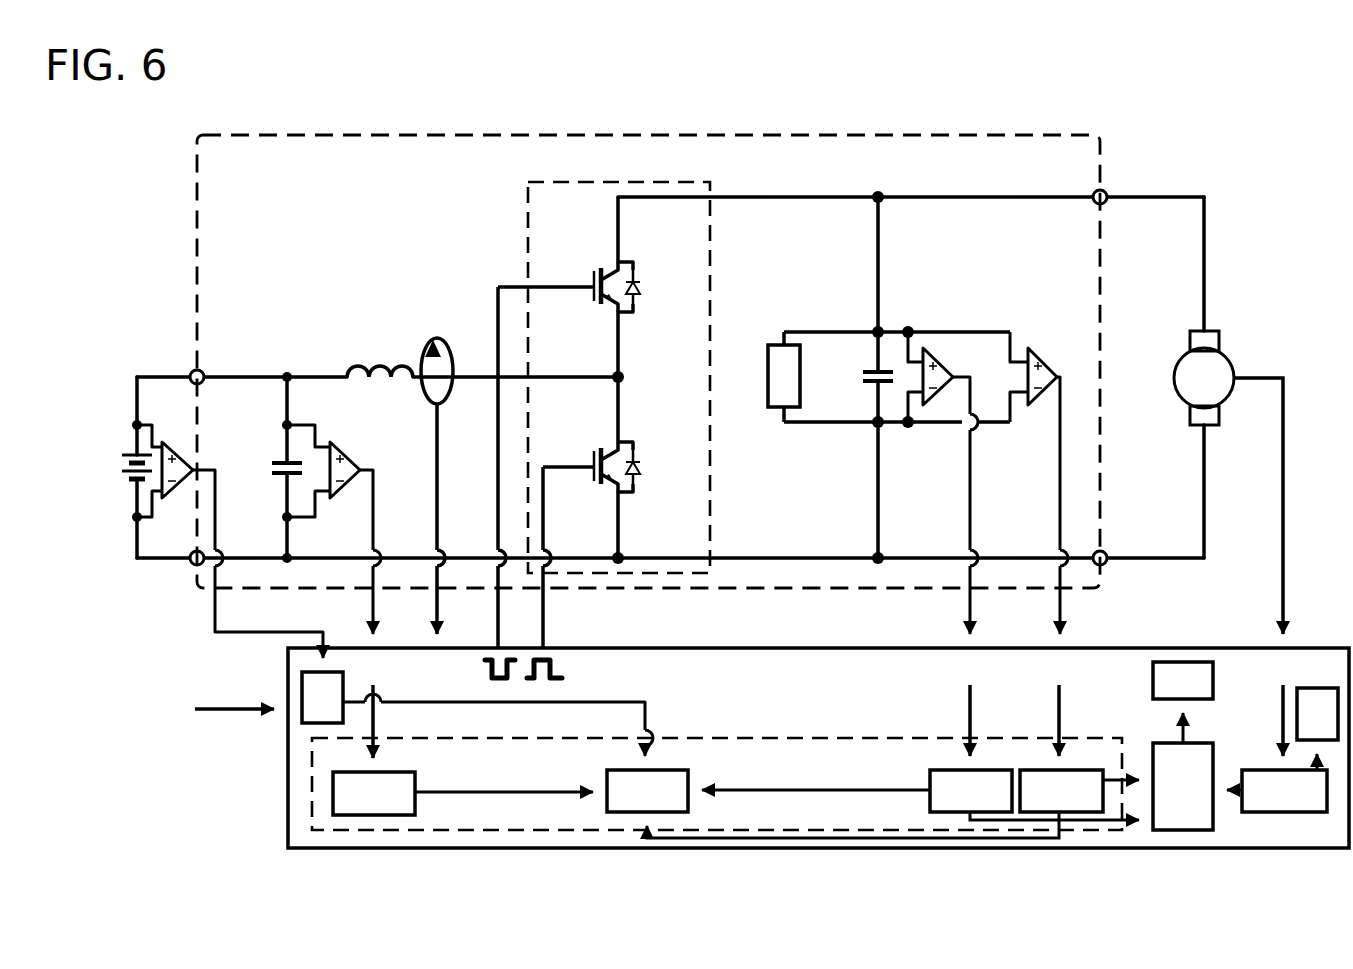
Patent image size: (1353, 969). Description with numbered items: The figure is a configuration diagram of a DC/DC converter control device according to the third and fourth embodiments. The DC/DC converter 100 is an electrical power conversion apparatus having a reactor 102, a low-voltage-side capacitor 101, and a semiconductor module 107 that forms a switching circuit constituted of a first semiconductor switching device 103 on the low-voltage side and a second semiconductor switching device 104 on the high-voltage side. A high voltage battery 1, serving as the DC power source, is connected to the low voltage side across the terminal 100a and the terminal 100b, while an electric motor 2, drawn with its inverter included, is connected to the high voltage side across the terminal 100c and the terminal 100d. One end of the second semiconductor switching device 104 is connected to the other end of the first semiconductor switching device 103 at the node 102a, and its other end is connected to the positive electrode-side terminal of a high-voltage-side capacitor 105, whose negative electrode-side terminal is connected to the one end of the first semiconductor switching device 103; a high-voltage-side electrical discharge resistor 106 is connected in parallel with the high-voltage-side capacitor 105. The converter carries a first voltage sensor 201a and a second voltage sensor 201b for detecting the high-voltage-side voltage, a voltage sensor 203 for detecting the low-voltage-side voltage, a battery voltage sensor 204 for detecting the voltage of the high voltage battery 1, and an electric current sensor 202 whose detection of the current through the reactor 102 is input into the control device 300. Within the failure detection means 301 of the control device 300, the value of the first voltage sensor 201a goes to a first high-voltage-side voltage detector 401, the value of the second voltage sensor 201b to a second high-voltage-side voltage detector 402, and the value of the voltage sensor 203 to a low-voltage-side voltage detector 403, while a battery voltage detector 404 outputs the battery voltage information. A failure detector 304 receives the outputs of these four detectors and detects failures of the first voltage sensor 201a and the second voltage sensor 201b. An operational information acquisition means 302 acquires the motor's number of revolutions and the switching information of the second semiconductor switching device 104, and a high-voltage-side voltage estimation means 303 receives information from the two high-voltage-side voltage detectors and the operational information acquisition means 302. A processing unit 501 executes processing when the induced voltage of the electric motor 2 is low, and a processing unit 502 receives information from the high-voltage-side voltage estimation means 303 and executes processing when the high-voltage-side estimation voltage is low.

The high voltage battery 1 is at (125, 450).
The electric motor 2 is at (1221, 331).
The DC/DC converter 100 is at (763, 135).
The terminal 100a is at (195, 565).
The terminal 100b is at (190, 370).
The terminal 100c is at (1103, 567).
The terminal 100d is at (1103, 187).
The low-voltage-side capacitor 101 is at (273, 482).
The reactor 102 is at (355, 340).
The connection node 102a is at (623, 373).
The first semiconductor switching device 103 is at (632, 500).
The second semiconductor switching device 104 is at (605, 257).
The high-voltage-side capacitor 105 is at (858, 378).
The high-voltage-side electrical discharge resistor 106 is at (780, 333).
The semiconductor module 107 is at (613, 180).
The first voltage sensor 201a is at (927, 347).
The second voltage sensor 201b is at (1075, 323).
The electric current sensor 202 is at (440, 338).
The voltage sensor 203 is at (373, 423).
The battery voltage sensor 204 is at (197, 437).
The control device 300 is at (855, 848).
The failure detection means 301 is at (748, 740).
The operational information acquisition means 302 is at (1283, 813).
The high-voltage-side voltage estimation means 303 is at (1190, 830).
The failure detector 304 is at (625, 813).
The first high-voltage-side voltage detector 401 is at (952, 813).
The second high-voltage-side voltage detector 402 is at (1082, 813).
The low-voltage-side voltage detector 403 is at (370, 817).
The battery voltage detector 404 is at (312, 723).
The processing unit 501 is at (1320, 688).
The processing unit 502 is at (1197, 662).